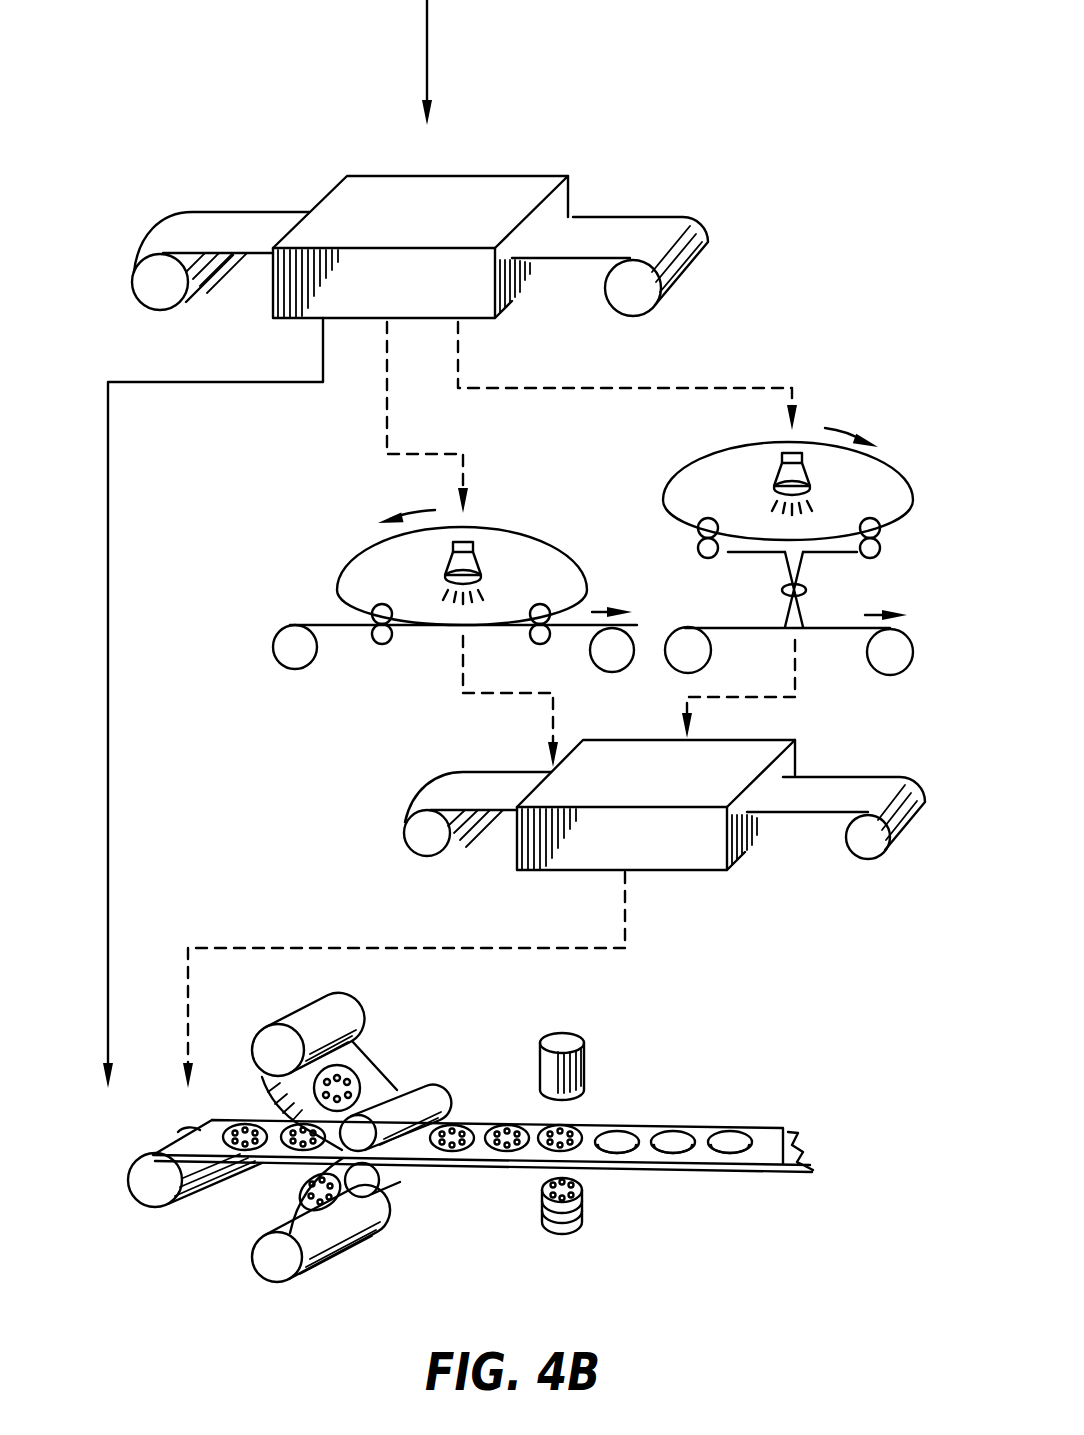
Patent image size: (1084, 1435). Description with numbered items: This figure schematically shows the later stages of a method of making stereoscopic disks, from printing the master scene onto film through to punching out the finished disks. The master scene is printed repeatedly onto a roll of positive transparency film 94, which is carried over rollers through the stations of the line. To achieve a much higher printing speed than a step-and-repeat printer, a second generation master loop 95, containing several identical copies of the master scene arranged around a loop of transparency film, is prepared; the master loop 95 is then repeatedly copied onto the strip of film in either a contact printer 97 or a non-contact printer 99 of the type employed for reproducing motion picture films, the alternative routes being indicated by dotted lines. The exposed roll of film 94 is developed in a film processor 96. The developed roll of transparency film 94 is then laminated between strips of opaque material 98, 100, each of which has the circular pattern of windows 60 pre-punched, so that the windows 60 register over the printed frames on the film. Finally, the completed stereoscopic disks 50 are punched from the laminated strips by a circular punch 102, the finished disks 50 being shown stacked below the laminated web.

The stereoscopic disks 50 is at (583, 1182).
The windows 60 is at (355, 1080).
The roll of positive transparency film 94 is at (140, 282).
The second generation master loop 95 is at (515, 532).
The film processor 96 is at (517, 190).
The contact printer 97 is at (320, 520).
The strip of opaque material 98 is at (343, 1062).
The non-contact printer 99 is at (866, 386).
The strip of opaque material 100 is at (273, 1210).
The circular punch 102 is at (567, 1043).